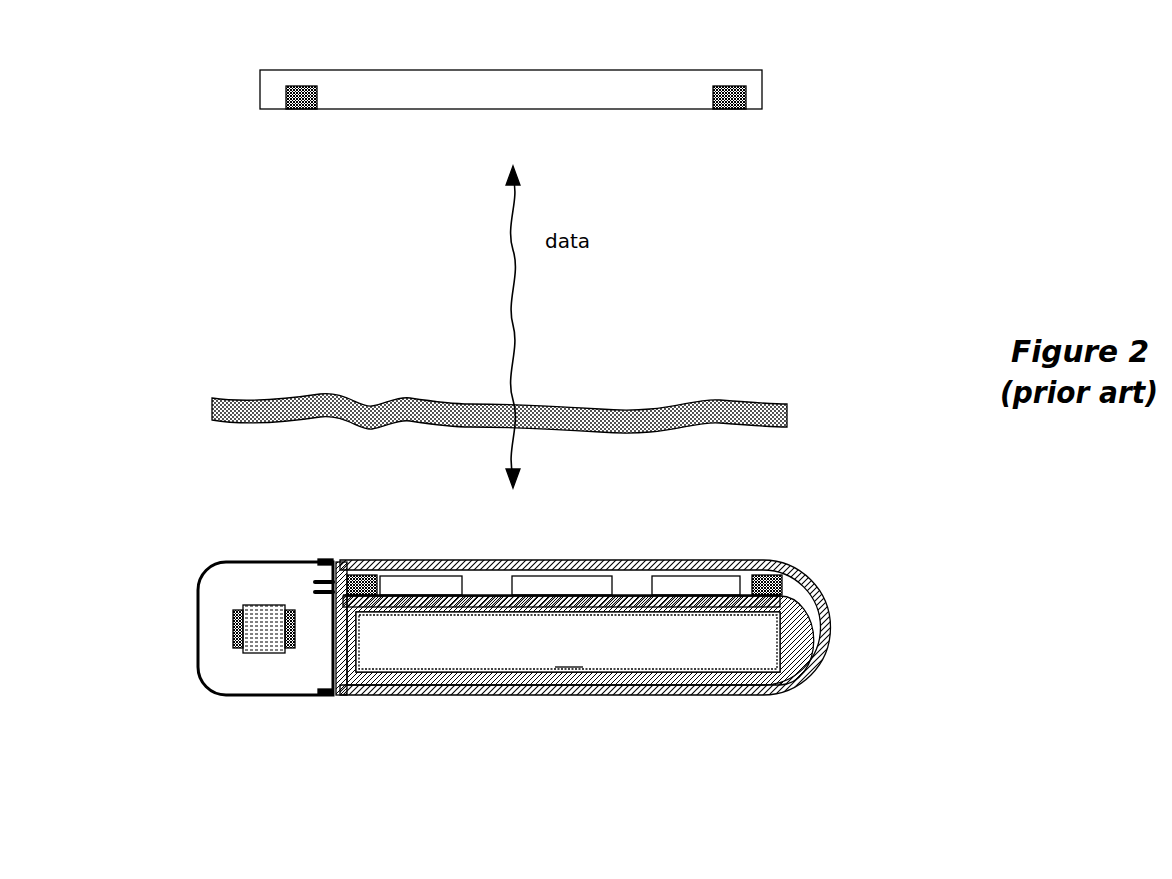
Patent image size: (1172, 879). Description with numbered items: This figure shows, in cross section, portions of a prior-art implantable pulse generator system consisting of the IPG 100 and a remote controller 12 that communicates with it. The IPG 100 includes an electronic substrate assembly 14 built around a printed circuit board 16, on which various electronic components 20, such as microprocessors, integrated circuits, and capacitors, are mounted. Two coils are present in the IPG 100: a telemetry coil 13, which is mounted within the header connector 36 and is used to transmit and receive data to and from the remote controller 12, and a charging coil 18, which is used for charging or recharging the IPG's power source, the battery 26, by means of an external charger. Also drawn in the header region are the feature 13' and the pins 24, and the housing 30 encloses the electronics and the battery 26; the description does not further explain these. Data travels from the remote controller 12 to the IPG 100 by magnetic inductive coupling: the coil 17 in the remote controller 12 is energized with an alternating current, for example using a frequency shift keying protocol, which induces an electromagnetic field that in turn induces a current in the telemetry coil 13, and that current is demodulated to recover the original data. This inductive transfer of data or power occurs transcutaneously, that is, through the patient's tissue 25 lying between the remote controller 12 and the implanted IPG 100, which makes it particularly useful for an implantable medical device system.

The remote controller 12 is at (478, 30).
The coil 17 is at (286, 100).
The patient's tissue 25 is at (760, 403).
The IPG 100 is at (288, 492).
The header connector 36 is at (231, 561).
The feedthrough pins 24 is at (316, 578).
The charging coil 18 is at (358, 575).
The electronic components 20 is at (423, 586).
The electronic substrate assembly 14 is at (492, 596).
The printed circuit board 16 is at (626, 594).
The telemetry coil 13 is at (266, 645).
The connector contacts 13' is at (267, 613).
The battery 26 is at (580, 640).
The housing 30 is at (383, 697).